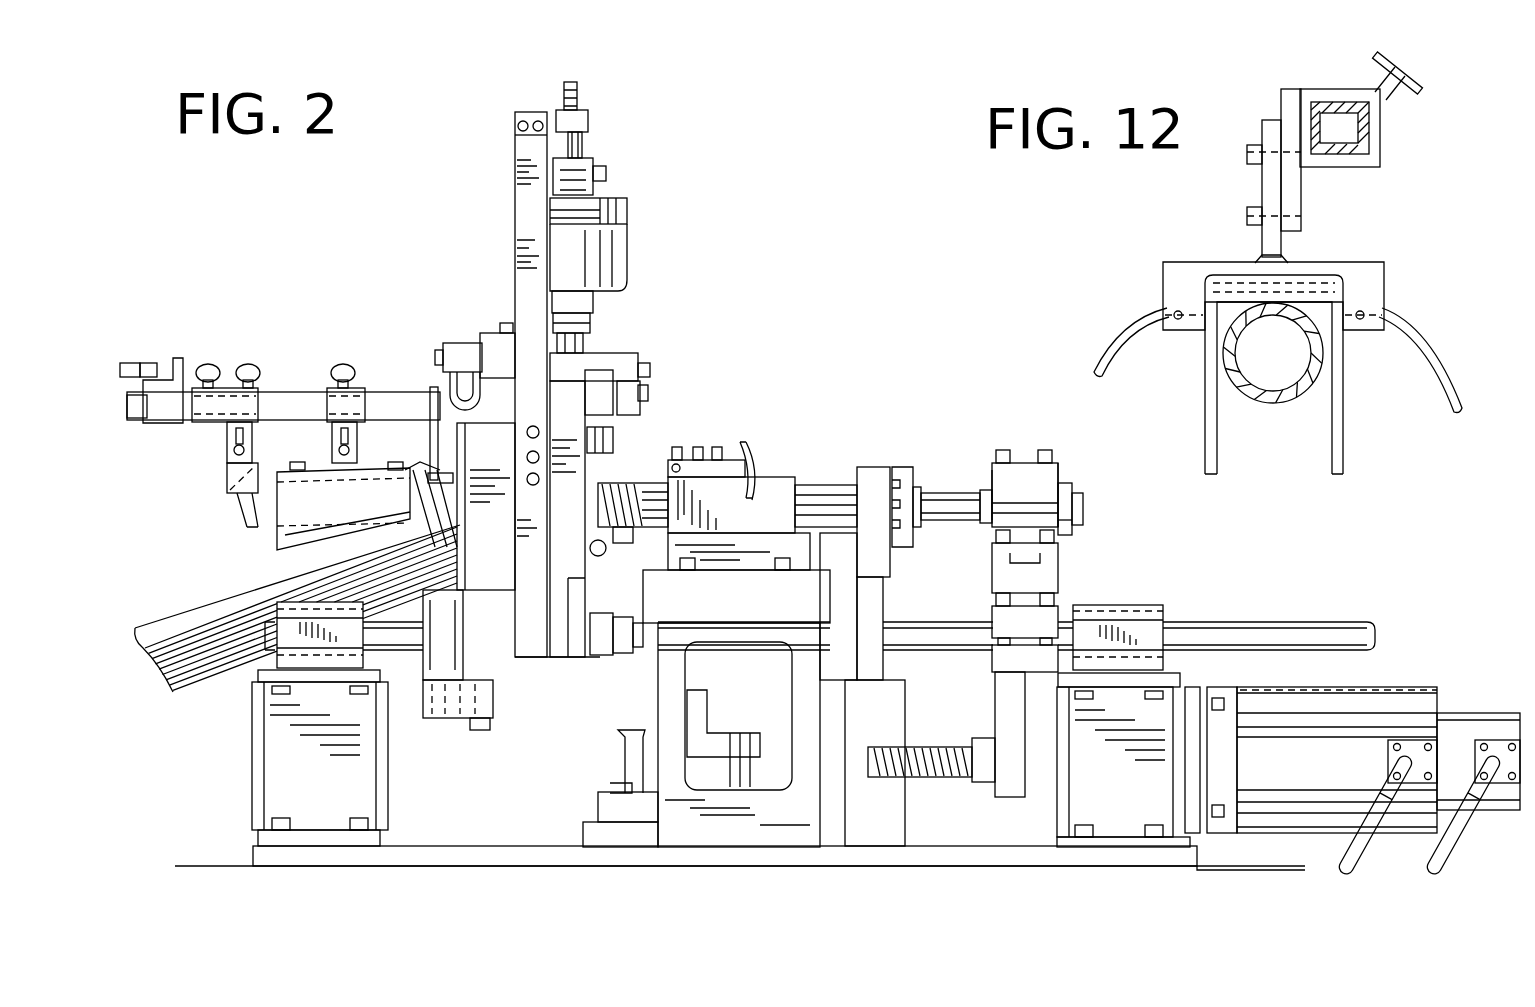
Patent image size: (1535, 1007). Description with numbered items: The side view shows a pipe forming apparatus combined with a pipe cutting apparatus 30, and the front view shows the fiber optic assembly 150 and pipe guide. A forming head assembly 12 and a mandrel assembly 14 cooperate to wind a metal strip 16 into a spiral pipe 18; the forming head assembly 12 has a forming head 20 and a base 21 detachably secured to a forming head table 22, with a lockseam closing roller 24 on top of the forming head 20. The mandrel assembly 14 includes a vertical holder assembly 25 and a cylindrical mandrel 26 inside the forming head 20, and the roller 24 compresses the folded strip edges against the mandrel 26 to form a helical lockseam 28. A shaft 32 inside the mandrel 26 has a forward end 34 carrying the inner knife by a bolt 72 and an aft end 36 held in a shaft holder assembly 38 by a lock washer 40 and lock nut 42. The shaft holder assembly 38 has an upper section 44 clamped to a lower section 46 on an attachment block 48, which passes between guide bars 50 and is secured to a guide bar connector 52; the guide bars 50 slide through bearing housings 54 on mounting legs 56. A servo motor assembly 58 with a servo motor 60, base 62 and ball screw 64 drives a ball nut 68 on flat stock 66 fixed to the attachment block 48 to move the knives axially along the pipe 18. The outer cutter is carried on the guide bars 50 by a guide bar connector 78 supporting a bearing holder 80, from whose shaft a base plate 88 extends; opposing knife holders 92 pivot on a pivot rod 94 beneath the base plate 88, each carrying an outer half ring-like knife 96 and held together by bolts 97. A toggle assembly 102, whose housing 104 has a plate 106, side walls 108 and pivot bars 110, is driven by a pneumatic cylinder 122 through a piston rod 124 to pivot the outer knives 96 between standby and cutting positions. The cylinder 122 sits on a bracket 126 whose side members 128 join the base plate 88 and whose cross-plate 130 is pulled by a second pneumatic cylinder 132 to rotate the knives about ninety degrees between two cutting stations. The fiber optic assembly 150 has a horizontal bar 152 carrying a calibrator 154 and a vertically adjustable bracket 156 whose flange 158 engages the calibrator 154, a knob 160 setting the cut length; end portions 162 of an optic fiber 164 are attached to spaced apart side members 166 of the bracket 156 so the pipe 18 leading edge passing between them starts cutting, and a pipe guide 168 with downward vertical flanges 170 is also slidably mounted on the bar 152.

In FIG. 2, the forming head assembly 12 is at (239, 245).
In FIG. 2, the mandrel assembly 14 is at (907, 465).
In FIG. 2, the metal strip 16 is at (617, 483).
In FIG. 2, the spiral pipe 18 is at (426, 468).
In FIG. 12, the spiral pipe 18 is at (1292, 402).
In FIG. 2, the forming head 20 is at (781, 477).
In FIG. 2, the base 21 is at (838, 540).
In FIG. 2, the forming head table 22 is at (706, 708).
In FIG. 2, the lockseam closing roller 24 is at (738, 442).
In FIG. 2, the vertical holder assembly 25 is at (873, 467).
In FIG. 2, the cylindrical mandrel 26 is at (823, 485).
In FIG. 2, the helical lockseam 28 is at (598, 552).
In FIG. 2, the pipe cutting apparatus 30 is at (704, 138).
In FIG. 2, the shaft 32 is at (920, 493).
In FIG. 2, the forward end 34 is at (646, 527).
In FIG. 2, the aft end 36 is at (1079, 490).
In FIG. 2, the shaft holder assembly 38 is at (1023, 458).
In FIG. 2, the lock washer 40 is at (1060, 533).
In FIG. 2, the lock nut 42 is at (1062, 527).
In FIG. 2, the upper section 44 is at (994, 480).
In FIG. 2, the lower section 46 is at (992, 541).
In FIG. 2, the attachment block 48 is at (992, 578).
In FIG. 2, the guide bars 50 is at (403, 648).
In FIG. 2, the guide bar connector 52 is at (991, 658).
In FIG. 2, the bearing housings 54 is at (273, 660).
In FIG. 2, the mounting leg 56 is at (327, 776).
In FIG. 2, the servo motor assembly 58 is at (1396, 681).
In FIG. 2, the servo motor 60 is at (1430, 687).
In FIG. 2, the base 62 is at (1213, 838).
In FIG. 2, the ball screw 64 is at (900, 778).
In FIG. 2, the flat stock 66 is at (1012, 798).
In FIG. 2, the ball nut 68 is at (983, 778).
In FIG. 2, the bolt 72 is at (187, 692).
In FIG. 2, the guide bar connector 78 is at (423, 704).
In FIG. 2, the bearing holder 80 is at (515, 690).
In FIG. 2, the base plate 88 is at (540, 660).
In FIG. 2, the knife holders 92 is at (581, 660).
In FIG. 2, the pivot rod 94 is at (636, 652).
In FIG. 2, the outer half ring-like knife 96 is at (595, 548).
In FIG. 2, the bolts 97 is at (616, 440).
In FIG. 2, the toggle assembly 102 is at (650, 344).
In FIG. 2, the housing 104 is at (649, 370).
In FIG. 2, the plate 106 is at (628, 352).
In FIG. 2, the side walls 108 is at (655, 378).
In FIG. 2, the pivot bars 110 is at (649, 393).
In FIG. 2, the pneumatic cylinder 122 is at (626, 252).
In FIG. 2, the piston rod 124 is at (584, 340).
In FIG. 2, the bracket 126 is at (511, 156).
In FIG. 2, the side members 128 is at (528, 198).
In FIG. 2, the cross-plate 130 is at (475, 340).
In FIG. 2, the second pneumatic cylinder 132 is at (449, 377).
In FIG. 2, the fiber optic assembly 150 is at (243, 314).
In FIG. 12, the fiber optic assembly 150 is at (1385, 214).
In FIG. 2, the horizontal bar 152 is at (290, 392).
In FIG. 12, the horizontal bar 152 is at (1333, 100).
In FIG. 2, the calibrator 154 is at (165, 355).
In FIG. 12, the vertically adjustable bracket 156 is at (1283, 84).
In FIG. 2, the upwardly extending flange 158 is at (195, 362).
In FIG. 2, the knob 160 is at (133, 363).
In FIG. 12, the end portions 162 is at (1167, 313).
In FIG. 2, the optic fiber 164 is at (247, 510).
In FIG. 12, the optic fiber 164 is at (1099, 338).
In FIG. 2, the side members 166 is at (292, 457).
In FIG. 12, the side members 166 is at (1163, 282).
In FIG. 2, the pipe guide 168 is at (373, 464).
In FIG. 12, the pipe guide 168 is at (1202, 452).
In FIG. 2, the vertical flanges 170 is at (287, 535).
In FIG. 12, the vertical flanges 170 is at (1204, 415).